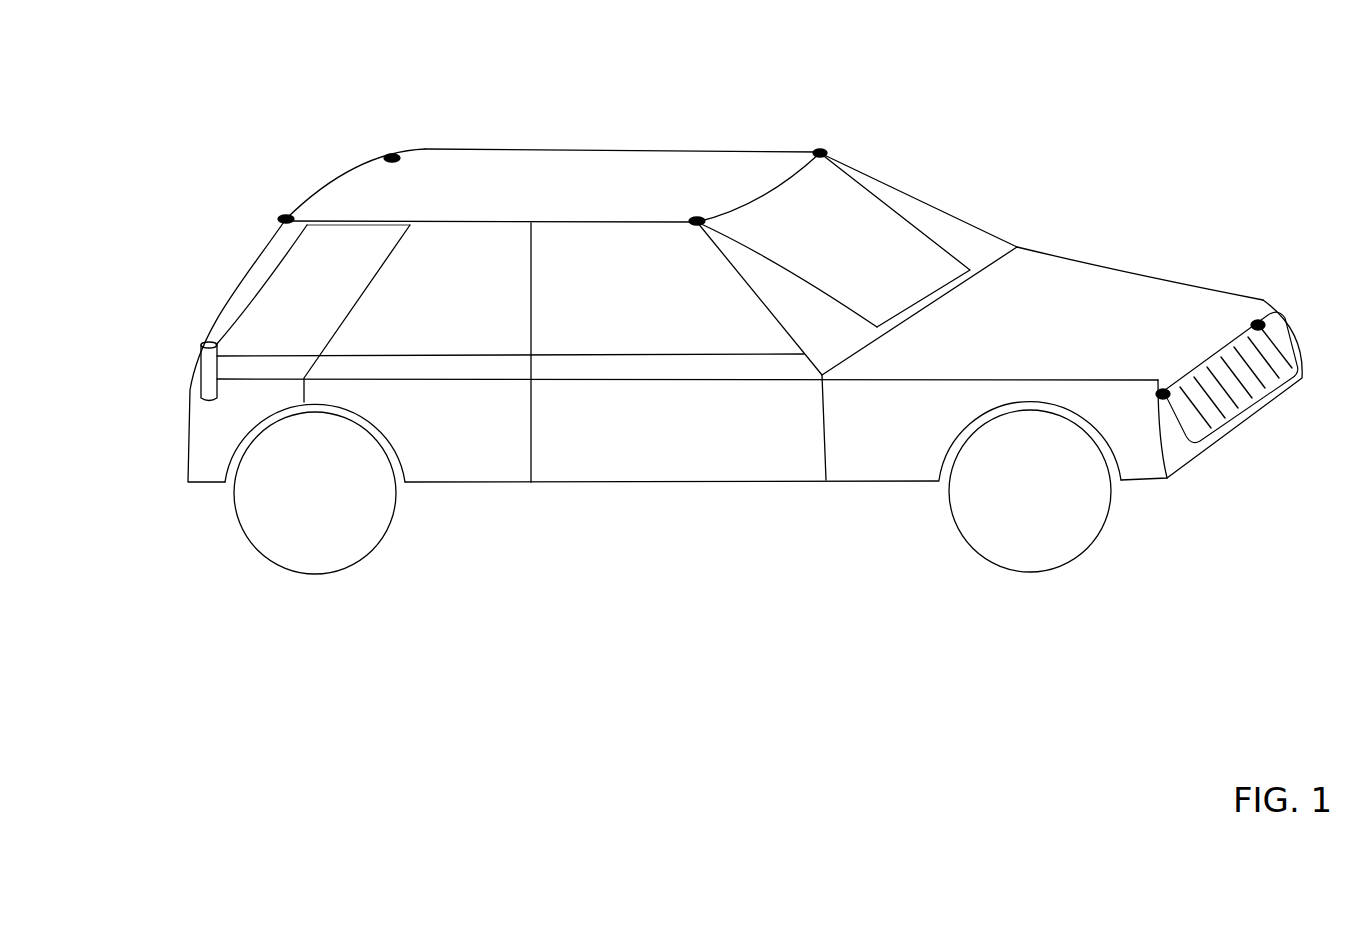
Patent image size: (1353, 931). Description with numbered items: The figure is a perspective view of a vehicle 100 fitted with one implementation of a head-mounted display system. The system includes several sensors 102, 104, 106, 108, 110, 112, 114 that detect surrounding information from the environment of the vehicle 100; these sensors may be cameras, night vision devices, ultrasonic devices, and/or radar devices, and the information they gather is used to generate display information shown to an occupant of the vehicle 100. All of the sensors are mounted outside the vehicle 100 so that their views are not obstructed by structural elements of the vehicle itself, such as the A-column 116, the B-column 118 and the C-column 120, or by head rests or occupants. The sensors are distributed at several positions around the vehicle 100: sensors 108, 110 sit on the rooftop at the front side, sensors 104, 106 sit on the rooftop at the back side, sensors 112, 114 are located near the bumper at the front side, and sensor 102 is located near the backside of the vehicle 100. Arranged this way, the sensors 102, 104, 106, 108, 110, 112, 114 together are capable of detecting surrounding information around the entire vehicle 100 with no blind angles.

The vehicle 100 is at (680, 482).
The sensor 102 is at (202, 375).
The sensor 104 is at (284, 213).
The sensor 106 is at (386, 156).
The sensor 108 is at (692, 217).
The sensor 110 is at (816, 150).
The sensor 112 is at (1158, 380).
The sensor 114 is at (1259, 320).
The A-column 116 is at (907, 195).
The B-column 118 is at (531, 288).
The C-column 120 is at (340, 288).